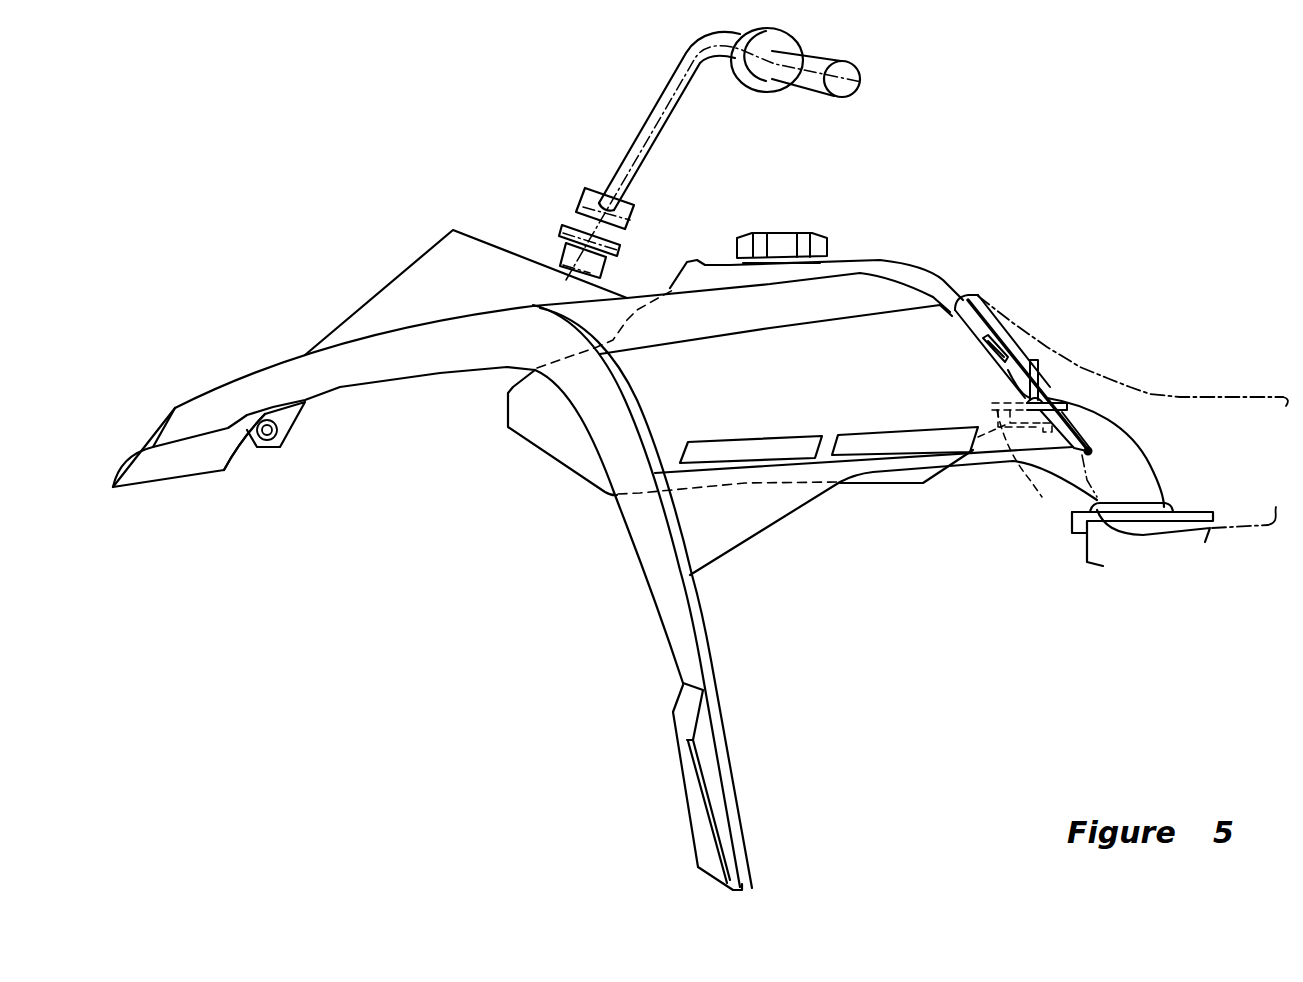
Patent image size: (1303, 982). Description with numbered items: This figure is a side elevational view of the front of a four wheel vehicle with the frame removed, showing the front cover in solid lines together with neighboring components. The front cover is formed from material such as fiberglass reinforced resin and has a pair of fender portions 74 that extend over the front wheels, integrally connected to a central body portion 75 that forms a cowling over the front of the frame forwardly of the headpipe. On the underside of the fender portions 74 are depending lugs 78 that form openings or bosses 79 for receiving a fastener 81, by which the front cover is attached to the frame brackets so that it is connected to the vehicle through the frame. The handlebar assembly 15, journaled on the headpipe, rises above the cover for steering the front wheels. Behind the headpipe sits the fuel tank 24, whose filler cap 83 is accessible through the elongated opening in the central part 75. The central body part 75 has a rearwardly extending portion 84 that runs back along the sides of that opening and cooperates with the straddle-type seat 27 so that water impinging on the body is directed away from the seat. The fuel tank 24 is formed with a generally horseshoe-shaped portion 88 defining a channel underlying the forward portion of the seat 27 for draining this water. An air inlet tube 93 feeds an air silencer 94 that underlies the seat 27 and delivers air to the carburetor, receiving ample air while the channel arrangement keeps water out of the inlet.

The handlebar assembly 15 is at (810, 97).
The fuel tank 24 is at (940, 265).
The straddle-type seat 27 is at (1165, 397).
The fender portion 74 is at (353, 360).
The central body portion 75 is at (402, 275).
The depending lug 78 is at (294, 416).
The opening or boss 79 is at (290, 433).
The fastener 81 is at (270, 443).
The filler cap 83 is at (777, 240).
The rearwardly extending portion 84 is at (887, 418).
The horseshoe-shaped portion 88 is at (1040, 375).
The air inlet tube 93 is at (1140, 453).
The air silencer 94 is at (1093, 547).